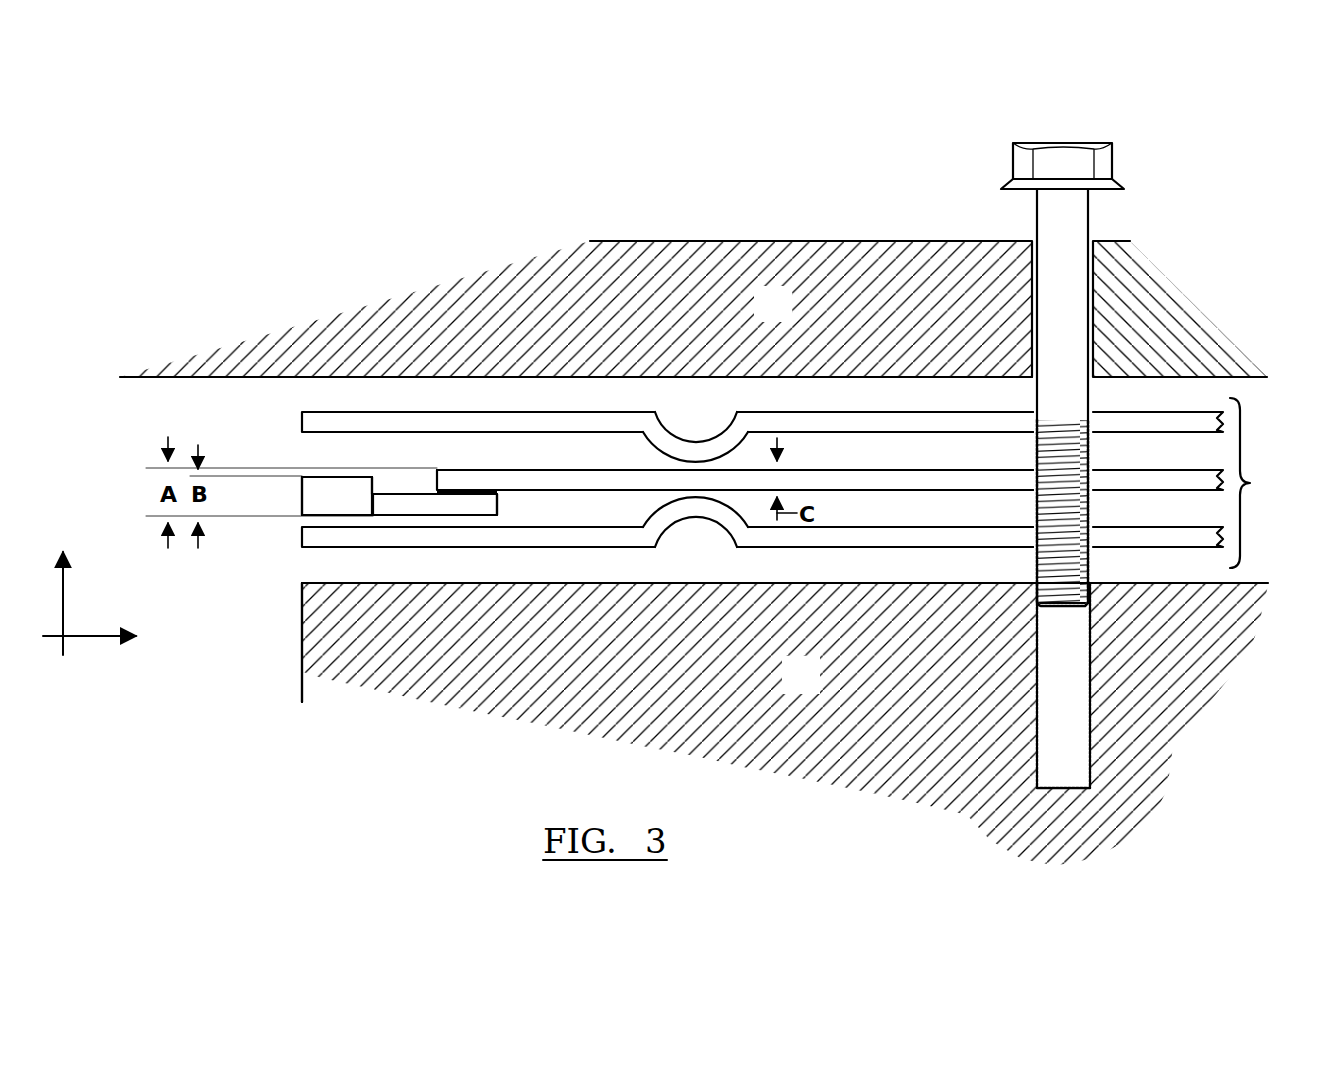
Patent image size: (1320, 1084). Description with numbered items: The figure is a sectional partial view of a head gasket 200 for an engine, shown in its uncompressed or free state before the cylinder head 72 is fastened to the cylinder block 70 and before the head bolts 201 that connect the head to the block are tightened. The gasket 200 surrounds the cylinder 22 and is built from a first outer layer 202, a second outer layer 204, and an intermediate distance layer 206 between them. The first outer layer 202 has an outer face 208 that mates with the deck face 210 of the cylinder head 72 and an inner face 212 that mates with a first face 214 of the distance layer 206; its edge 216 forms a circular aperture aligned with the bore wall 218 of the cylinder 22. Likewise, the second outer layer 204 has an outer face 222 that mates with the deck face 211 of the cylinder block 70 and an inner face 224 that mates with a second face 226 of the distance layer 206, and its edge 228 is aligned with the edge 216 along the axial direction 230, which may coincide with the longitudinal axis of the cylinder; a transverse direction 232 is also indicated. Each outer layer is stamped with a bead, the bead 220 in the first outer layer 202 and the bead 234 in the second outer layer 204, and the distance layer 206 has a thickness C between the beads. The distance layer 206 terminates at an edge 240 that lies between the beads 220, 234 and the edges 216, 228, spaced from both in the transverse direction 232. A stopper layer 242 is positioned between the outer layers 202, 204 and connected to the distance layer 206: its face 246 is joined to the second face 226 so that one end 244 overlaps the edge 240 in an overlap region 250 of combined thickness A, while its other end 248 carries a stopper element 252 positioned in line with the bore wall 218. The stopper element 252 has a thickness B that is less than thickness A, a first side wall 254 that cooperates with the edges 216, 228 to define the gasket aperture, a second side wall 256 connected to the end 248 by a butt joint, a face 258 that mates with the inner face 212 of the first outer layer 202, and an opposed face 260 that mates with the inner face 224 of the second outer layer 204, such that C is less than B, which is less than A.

The cylinder 22 is at (214, 593).
The cylinder block 70 is at (815, 689).
The cylinder head 72 is at (786, 318).
The head gasket 200 is at (1263, 483).
The head bolts 201 is at (1082, 178).
The first outer layer 202 is at (1144, 420).
The second outer layer 204 is at (1144, 536).
The intermediate distance layer 206 is at (1144, 478).
The outer face 208 is at (876, 412).
The deck face 210 is at (910, 378).
The deck face 211 is at (915, 583).
The inner face 212 is at (872, 437).
The first face 214 is at (887, 469).
The edge 216 is at (298, 421).
The bore wall 218 is at (302, 600).
The bead 220 is at (674, 422).
The outer face 222 is at (915, 549).
The inner face 224 is at (915, 527).
The second face 226 is at (888, 491).
The edge 228 is at (302, 540).
The axial direction 230 is at (88, 596).
The transverse direction 232 is at (101, 616).
The bead 234 is at (679, 537).
The edge 240 is at (436, 470).
The stopper layer 242 is at (458, 503).
The end 244 is at (498, 504).
The face 246 is at (412, 492).
The end 248 is at (383, 503).
The overlap region 250 is at (497, 493).
The stopper element 252 is at (353, 508).
The first side wall 254 is at (302, 496).
The second side wall 256 is at (373, 482).
The face 258 is at (335, 477).
The opposed face 260 is at (347, 516).